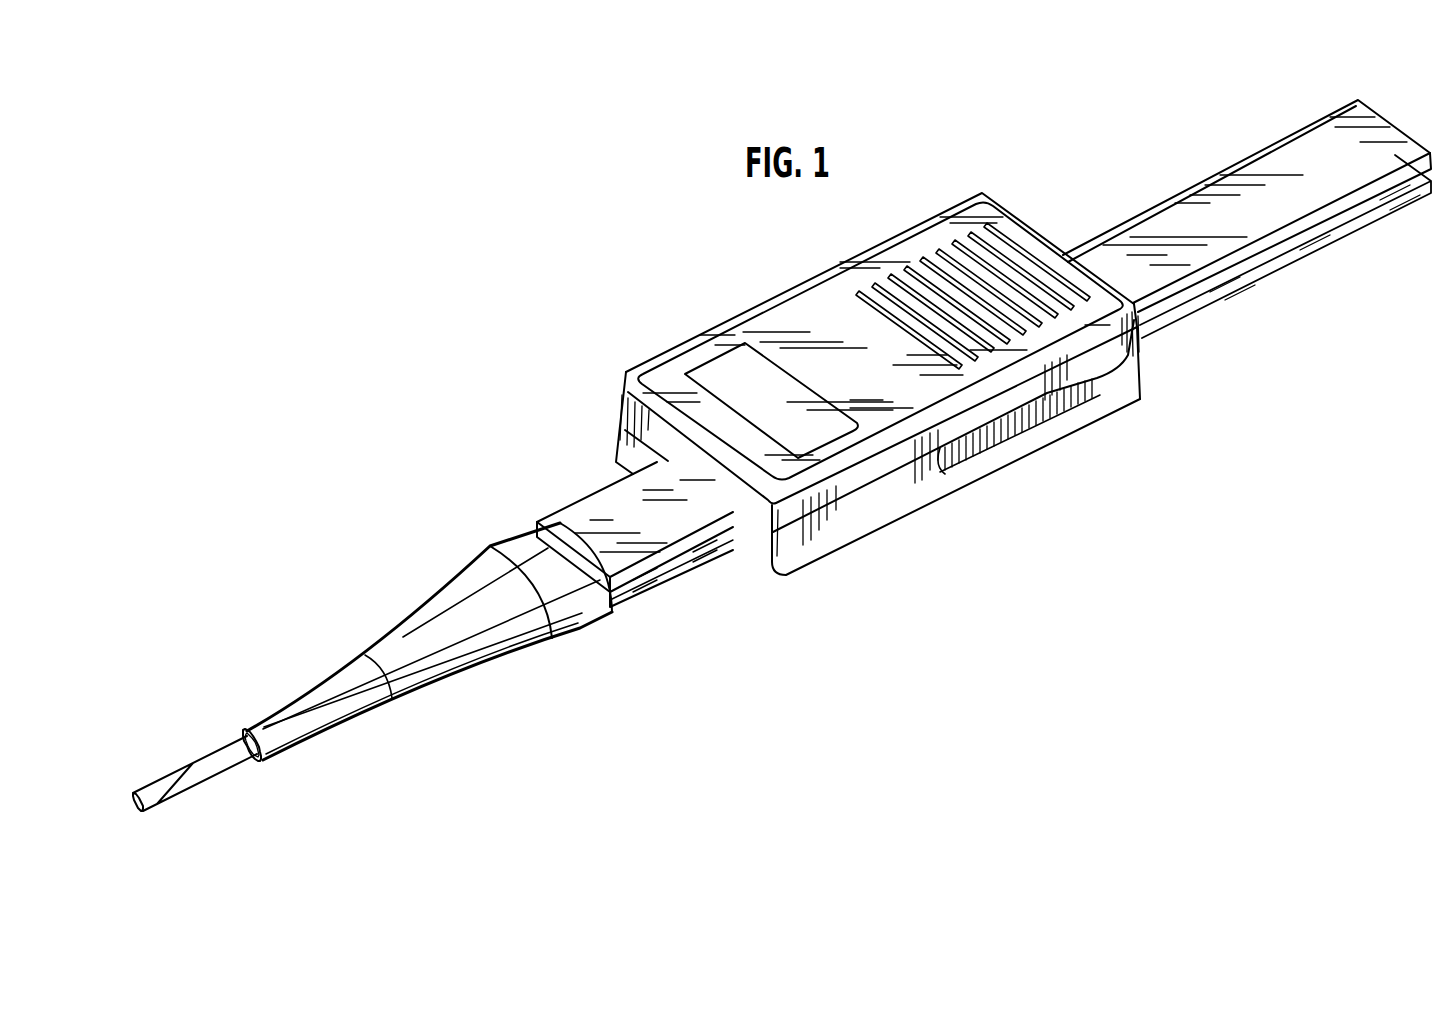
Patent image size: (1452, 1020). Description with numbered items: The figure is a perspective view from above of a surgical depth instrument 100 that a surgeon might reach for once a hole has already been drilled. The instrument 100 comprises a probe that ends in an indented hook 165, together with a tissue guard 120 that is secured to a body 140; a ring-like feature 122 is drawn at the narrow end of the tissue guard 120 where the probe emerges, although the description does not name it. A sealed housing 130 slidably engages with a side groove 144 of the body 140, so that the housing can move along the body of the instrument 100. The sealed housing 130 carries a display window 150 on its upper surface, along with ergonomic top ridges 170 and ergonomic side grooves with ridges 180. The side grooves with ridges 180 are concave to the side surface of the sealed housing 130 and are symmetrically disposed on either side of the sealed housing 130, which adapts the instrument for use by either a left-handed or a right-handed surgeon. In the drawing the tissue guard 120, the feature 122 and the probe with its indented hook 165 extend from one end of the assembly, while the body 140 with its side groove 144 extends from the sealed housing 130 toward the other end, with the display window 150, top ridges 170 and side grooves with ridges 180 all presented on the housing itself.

The instrument 100 is at (740, 640).
The tissue guard 120 is at (393, 627).
The collar ring 122 is at (240, 730).
The sealed housing 130 is at (803, 288).
The body 140 is at (1110, 223).
The side groove 144 is at (1343, 227).
The display window 150 is at (733, 377).
The indented hook 165 is at (130, 790).
The ergonomic top ridges 170 is at (940, 254).
The side grooves with ridges 180 is at (983, 447).